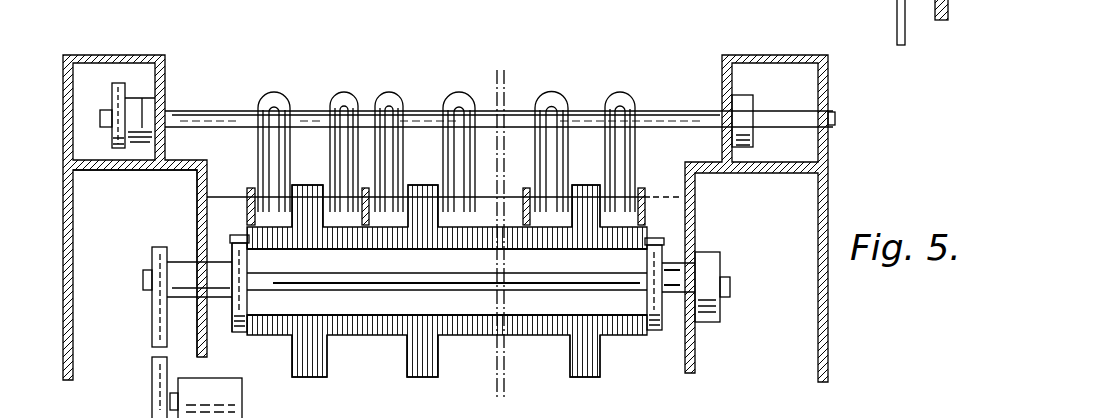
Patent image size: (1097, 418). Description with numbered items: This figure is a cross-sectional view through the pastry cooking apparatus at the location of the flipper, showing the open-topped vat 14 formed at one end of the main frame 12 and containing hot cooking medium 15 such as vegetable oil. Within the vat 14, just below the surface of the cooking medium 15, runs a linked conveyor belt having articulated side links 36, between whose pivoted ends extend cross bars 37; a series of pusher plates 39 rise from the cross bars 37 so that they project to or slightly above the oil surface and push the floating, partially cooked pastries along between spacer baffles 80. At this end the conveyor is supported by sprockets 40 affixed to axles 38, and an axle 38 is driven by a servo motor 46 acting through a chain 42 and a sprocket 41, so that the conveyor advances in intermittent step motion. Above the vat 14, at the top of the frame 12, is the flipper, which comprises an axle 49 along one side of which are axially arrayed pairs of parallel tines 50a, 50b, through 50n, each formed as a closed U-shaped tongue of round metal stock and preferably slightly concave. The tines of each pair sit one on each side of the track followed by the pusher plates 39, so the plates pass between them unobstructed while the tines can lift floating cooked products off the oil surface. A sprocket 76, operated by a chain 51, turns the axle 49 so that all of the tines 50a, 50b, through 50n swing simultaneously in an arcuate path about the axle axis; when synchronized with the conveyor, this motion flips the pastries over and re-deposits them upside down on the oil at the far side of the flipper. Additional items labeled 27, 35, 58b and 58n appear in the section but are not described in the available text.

The main frame 12 is at (63, 230).
The open-topped vat 14 is at (207, 199).
The cooking medium 15 is at (668, 197).
The rod 27 is at (895, 8).
The carriage assembly 35 is at (232, 238).
The articulated side links 36 is at (232, 332).
The cross bars 37 is at (375, 240).
The axles 38 is at (730, 287).
The pusher plates 39 is at (440, 216).
The sprockets 40 is at (247, 306).
The sprocket 41 is at (152, 258).
The chain 42 is at (158, 326).
The servo motor 46 is at (242, 396).
The axle 49 is at (190, 116).
The tines 50a is at (342, 94).
The tines 50b is at (458, 94).
The tines 50n is at (620, 95).
The chain 51 is at (115, 82).
The element 58b is at (426, 411).
The element 58n is at (596, 411).
The sprocket 76 is at (113, 139).
The spacer baffles 80 is at (249, 222).